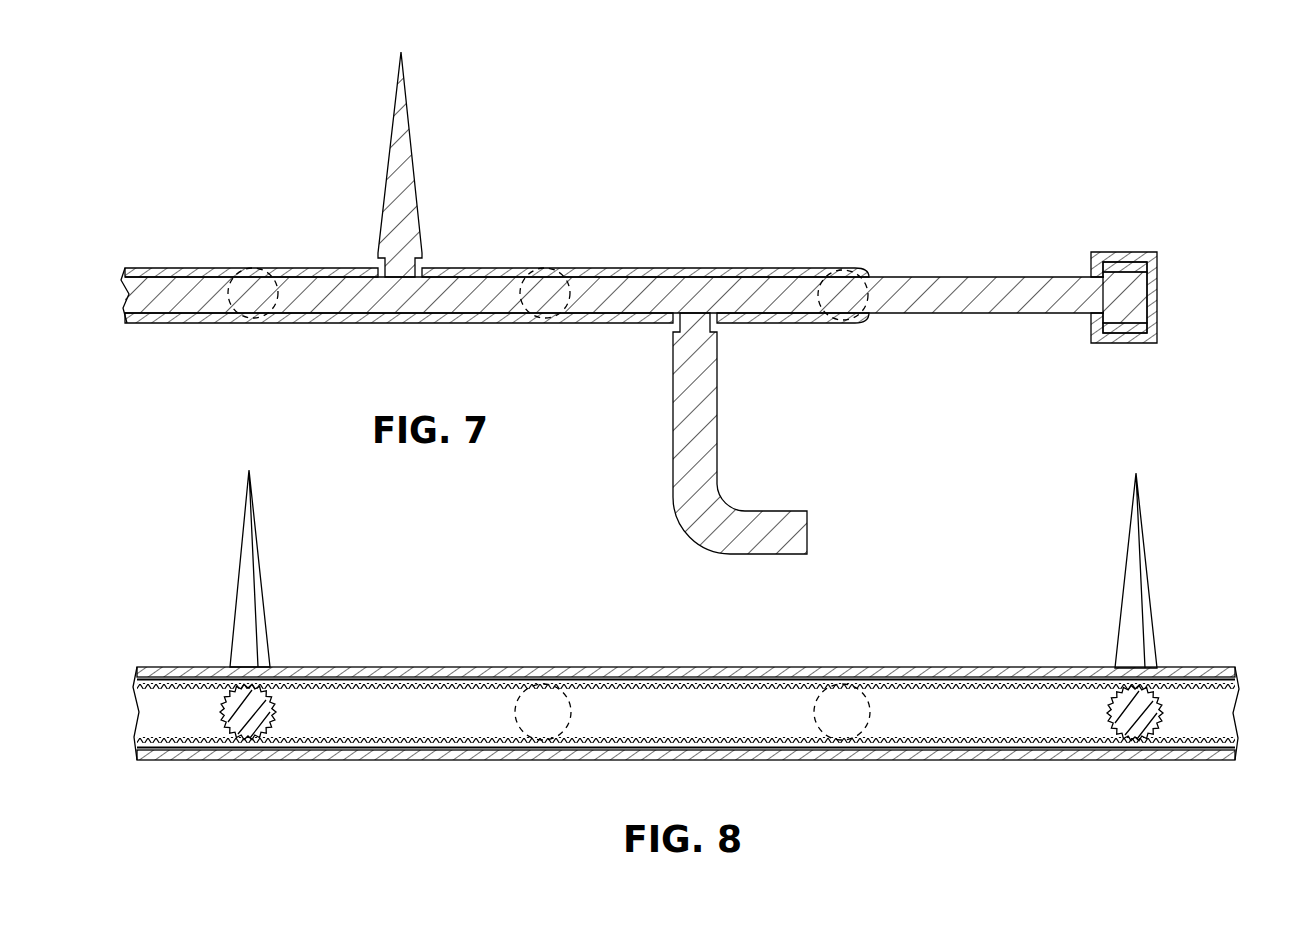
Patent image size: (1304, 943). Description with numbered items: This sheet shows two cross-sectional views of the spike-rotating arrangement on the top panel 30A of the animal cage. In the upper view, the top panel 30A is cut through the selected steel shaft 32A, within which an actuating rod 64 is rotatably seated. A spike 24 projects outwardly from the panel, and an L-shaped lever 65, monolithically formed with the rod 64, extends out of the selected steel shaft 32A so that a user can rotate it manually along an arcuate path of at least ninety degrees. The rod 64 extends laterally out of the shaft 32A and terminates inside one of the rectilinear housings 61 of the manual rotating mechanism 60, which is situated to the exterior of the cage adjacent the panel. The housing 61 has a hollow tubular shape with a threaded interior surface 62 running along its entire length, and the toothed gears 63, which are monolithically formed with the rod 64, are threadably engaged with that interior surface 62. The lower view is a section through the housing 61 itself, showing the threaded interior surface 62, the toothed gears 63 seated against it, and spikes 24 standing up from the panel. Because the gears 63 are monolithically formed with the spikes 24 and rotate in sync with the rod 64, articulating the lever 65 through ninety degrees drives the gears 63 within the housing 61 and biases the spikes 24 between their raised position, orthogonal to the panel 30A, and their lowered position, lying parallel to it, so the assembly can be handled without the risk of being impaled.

In FIG. 7, the top panel 30A is at (942, 140).
In FIG. 7, the spikes 24 is at (410, 112).
In FIG. 8, the spikes 24 is at (258, 512).
In FIG. 7, the selected steel shaft 32A is at (672, 268).
In FIG. 7, the actuating rod 64 is at (955, 277).
In FIG. 7, the L-shaped lever 65 is at (808, 525).
In FIG. 7, the rotating mechanism 60 is at (1091, 252).
In FIG. 8, the rotating mechanism 60 is at (536, 596).
In FIG. 7, the rectilinear housing 61 is at (1157, 258).
In FIG. 8, the rectilinear housing 61 is at (628, 760).
In FIG. 7, the threaded interior surface 62 is at (1115, 262).
In FIG. 8, the threaded interior surface 62 is at (730, 742).
In FIG. 7, the teethed gears 63 is at (1128, 297).
In FIG. 8, the teethed gears 63 is at (248, 715).